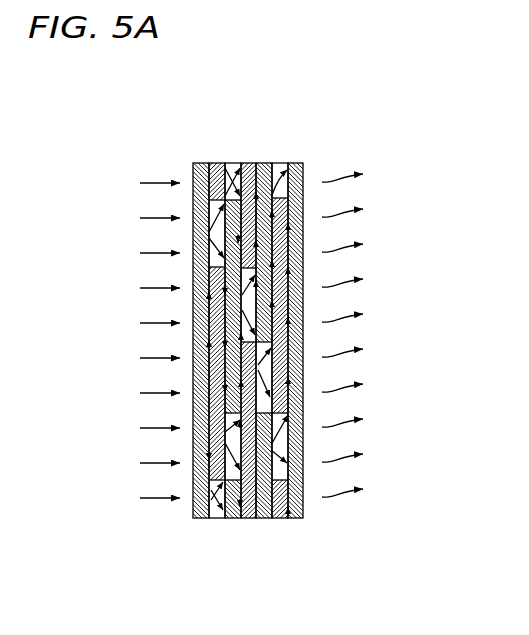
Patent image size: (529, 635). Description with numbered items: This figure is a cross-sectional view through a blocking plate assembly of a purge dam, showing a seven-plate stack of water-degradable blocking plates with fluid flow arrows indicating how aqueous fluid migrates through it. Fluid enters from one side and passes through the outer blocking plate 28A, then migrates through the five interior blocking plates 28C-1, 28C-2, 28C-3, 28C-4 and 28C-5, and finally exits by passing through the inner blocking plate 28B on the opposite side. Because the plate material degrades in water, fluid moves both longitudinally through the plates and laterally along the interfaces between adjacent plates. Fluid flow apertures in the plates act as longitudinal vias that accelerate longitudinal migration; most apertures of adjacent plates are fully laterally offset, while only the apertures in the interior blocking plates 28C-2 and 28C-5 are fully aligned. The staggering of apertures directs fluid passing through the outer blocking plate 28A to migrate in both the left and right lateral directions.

The outer blocking plate 28A is at (197, 163).
The inner blocking plate 28B is at (295, 518).
The interior blocking plate 28C-1 is at (213, 163).
The interior blocking plate 28C-2 is at (232, 518).
The interior blocking plate 28C-3 is at (243, 163).
The interior blocking plate 28C-4 is at (267, 163).
The interior blocking plate 28C-5 is at (278, 518).